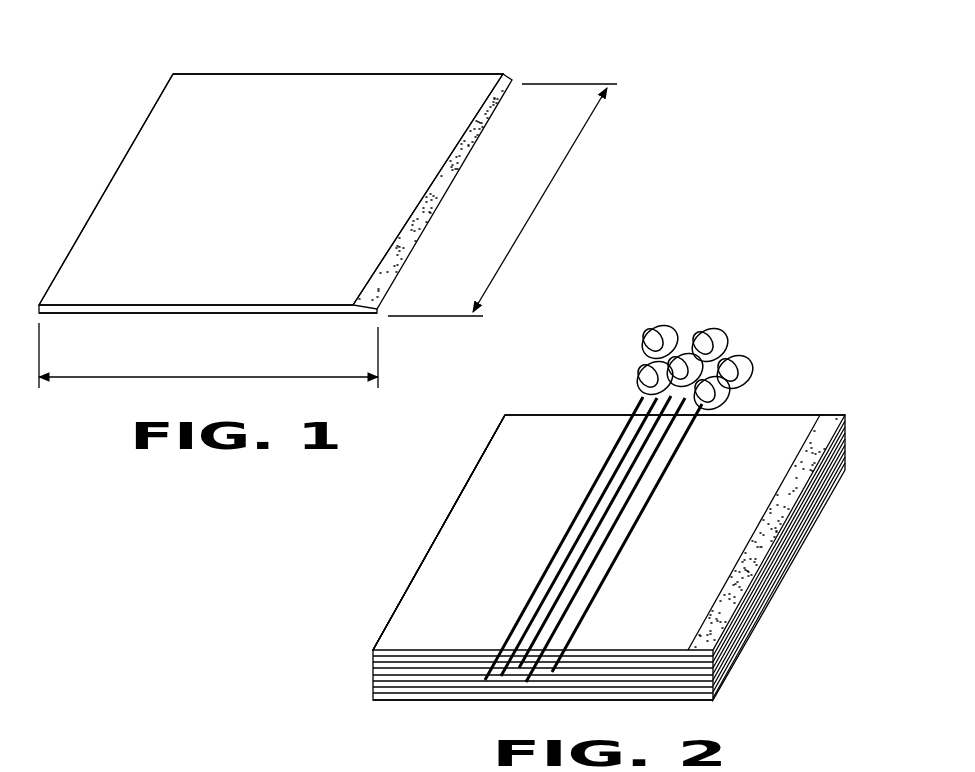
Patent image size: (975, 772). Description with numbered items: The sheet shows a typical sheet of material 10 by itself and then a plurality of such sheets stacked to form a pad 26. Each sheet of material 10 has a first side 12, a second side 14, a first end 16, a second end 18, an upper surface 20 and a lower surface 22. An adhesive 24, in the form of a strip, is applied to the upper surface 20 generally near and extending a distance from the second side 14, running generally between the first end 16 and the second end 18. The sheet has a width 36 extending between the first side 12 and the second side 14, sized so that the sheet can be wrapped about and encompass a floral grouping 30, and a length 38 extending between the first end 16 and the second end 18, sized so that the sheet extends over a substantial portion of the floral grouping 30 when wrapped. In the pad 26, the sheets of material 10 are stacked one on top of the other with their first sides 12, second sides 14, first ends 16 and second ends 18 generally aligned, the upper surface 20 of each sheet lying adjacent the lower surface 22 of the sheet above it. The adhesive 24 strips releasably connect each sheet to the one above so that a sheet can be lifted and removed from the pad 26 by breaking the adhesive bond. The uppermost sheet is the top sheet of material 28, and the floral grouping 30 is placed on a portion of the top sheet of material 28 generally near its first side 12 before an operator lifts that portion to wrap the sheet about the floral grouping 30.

In FIG. 1, the sheet of material 10 is at (478, 38).
In FIG. 2, the sheet of material 10 is at (475, 517).
In FIG. 1, the first side 12 is at (113, 178).
In FIG. 2, the first side 12 is at (441, 528).
In FIG. 1, the second side 14 is at (455, 170).
In FIG. 2, the second side 14 is at (737, 607).
In FIG. 1, the first end 16 is at (292, 73).
In FIG. 2, the first end 16 is at (563, 415).
In FIG. 1, the second end 18 is at (122, 310).
In FIG. 2, the second end 18 is at (422, 653).
In FIG. 1, the upper surface 20 is at (250, 287).
In FIG. 2, the upper surface 20 is at (512, 442).
In FIG. 1, the lower surface 22 is at (227, 315).
In FIG. 2, the lower surface 22 is at (660, 658).
In FIG. 1, the adhesive 24 is at (450, 157).
In FIG. 2, the adhesive 24 is at (737, 587).
In FIG. 2, the pad 26 is at (418, 562).
In FIG. 2, the top sheet of material 28 is at (505, 487).
In FIG. 2, the floral grouping 30 is at (648, 330).
In FIG. 1, the width 36 is at (200, 375).
In FIG. 1, the length 38 is at (541, 196).